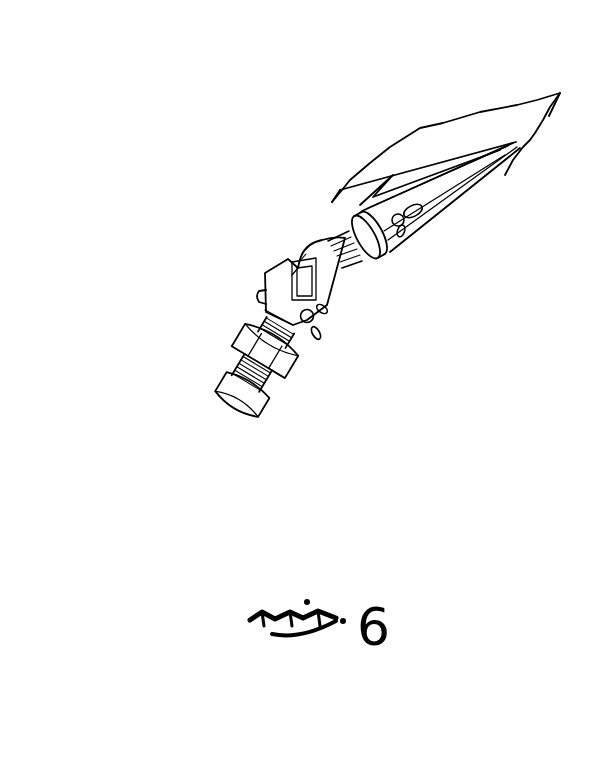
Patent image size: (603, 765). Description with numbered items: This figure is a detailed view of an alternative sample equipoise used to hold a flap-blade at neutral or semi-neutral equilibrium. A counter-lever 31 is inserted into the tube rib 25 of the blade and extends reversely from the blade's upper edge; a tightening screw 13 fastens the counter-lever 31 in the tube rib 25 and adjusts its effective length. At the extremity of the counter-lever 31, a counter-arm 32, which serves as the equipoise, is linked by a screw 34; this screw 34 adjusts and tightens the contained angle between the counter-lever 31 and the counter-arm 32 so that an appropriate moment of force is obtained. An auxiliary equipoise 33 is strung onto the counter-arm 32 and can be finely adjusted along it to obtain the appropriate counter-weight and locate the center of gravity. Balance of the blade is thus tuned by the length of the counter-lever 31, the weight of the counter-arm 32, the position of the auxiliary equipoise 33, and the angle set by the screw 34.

The tightening screw 13 is at (428, 218).
The tube rib 25 is at (412, 230).
The counter-lever 31 is at (370, 259).
The screw 34 is at (330, 312).
The auxiliary equipoise 33 is at (298, 362).
The counter-arm 32 is at (265, 383).